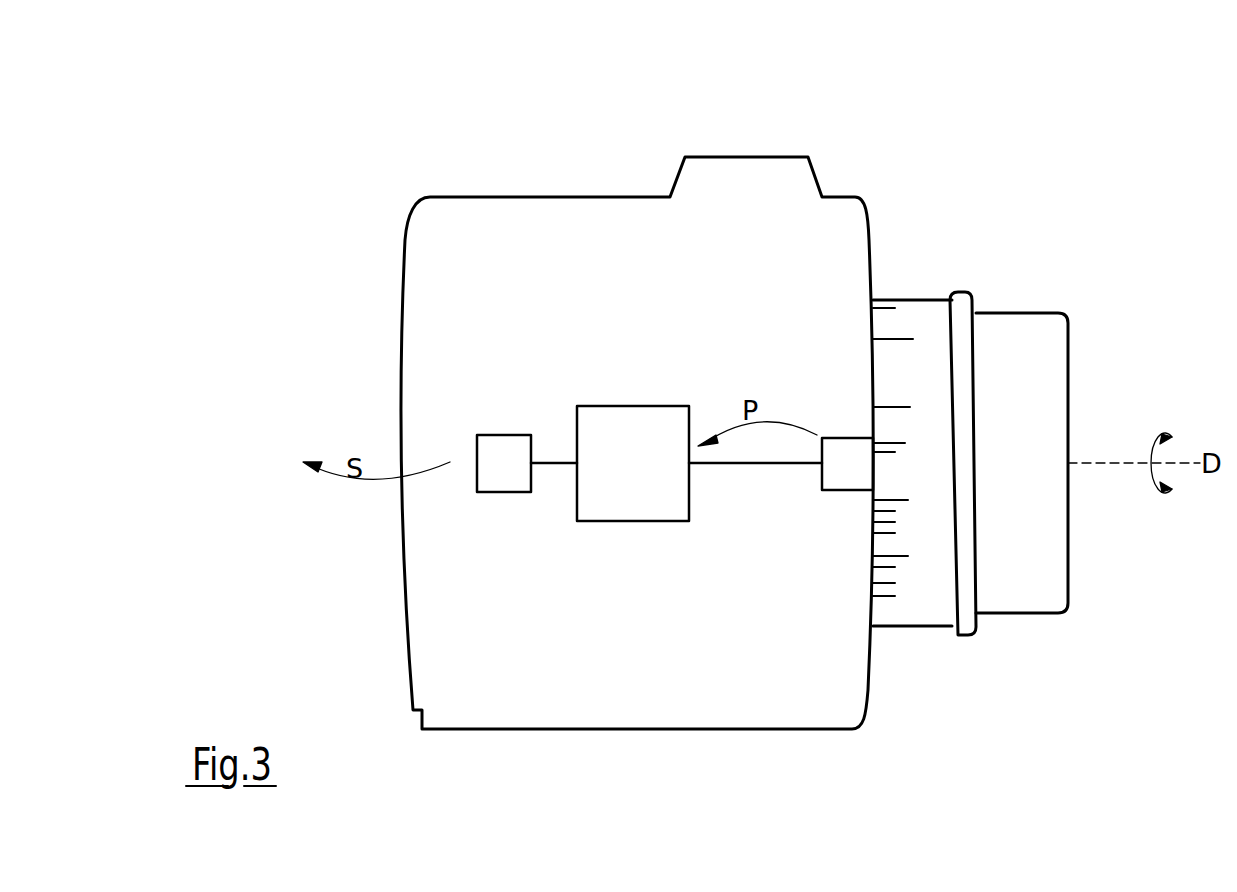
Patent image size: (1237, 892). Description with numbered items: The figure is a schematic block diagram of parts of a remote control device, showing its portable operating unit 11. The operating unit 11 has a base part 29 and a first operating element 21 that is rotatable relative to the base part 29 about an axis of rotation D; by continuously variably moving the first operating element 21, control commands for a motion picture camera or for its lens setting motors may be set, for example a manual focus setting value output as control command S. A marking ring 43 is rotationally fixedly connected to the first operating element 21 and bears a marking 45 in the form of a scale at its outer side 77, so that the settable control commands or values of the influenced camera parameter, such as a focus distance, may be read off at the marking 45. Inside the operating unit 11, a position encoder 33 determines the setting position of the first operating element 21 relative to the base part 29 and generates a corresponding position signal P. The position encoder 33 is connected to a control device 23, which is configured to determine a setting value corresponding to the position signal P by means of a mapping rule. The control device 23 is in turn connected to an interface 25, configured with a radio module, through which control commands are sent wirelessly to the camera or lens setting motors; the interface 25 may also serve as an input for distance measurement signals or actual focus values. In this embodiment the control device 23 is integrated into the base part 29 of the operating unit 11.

The operating unit 11 is at (302, 163).
The base part 29 is at (809, 668).
The interface 25 is at (518, 480).
The control device 23 is at (647, 480).
The position encoder 33 is at (862, 480).
The marking 45 is at (911, 325).
The marking ring 43 is at (938, 313).
The first operating element 21 is at (1010, 335).
The outer side 77 is at (920, 575).